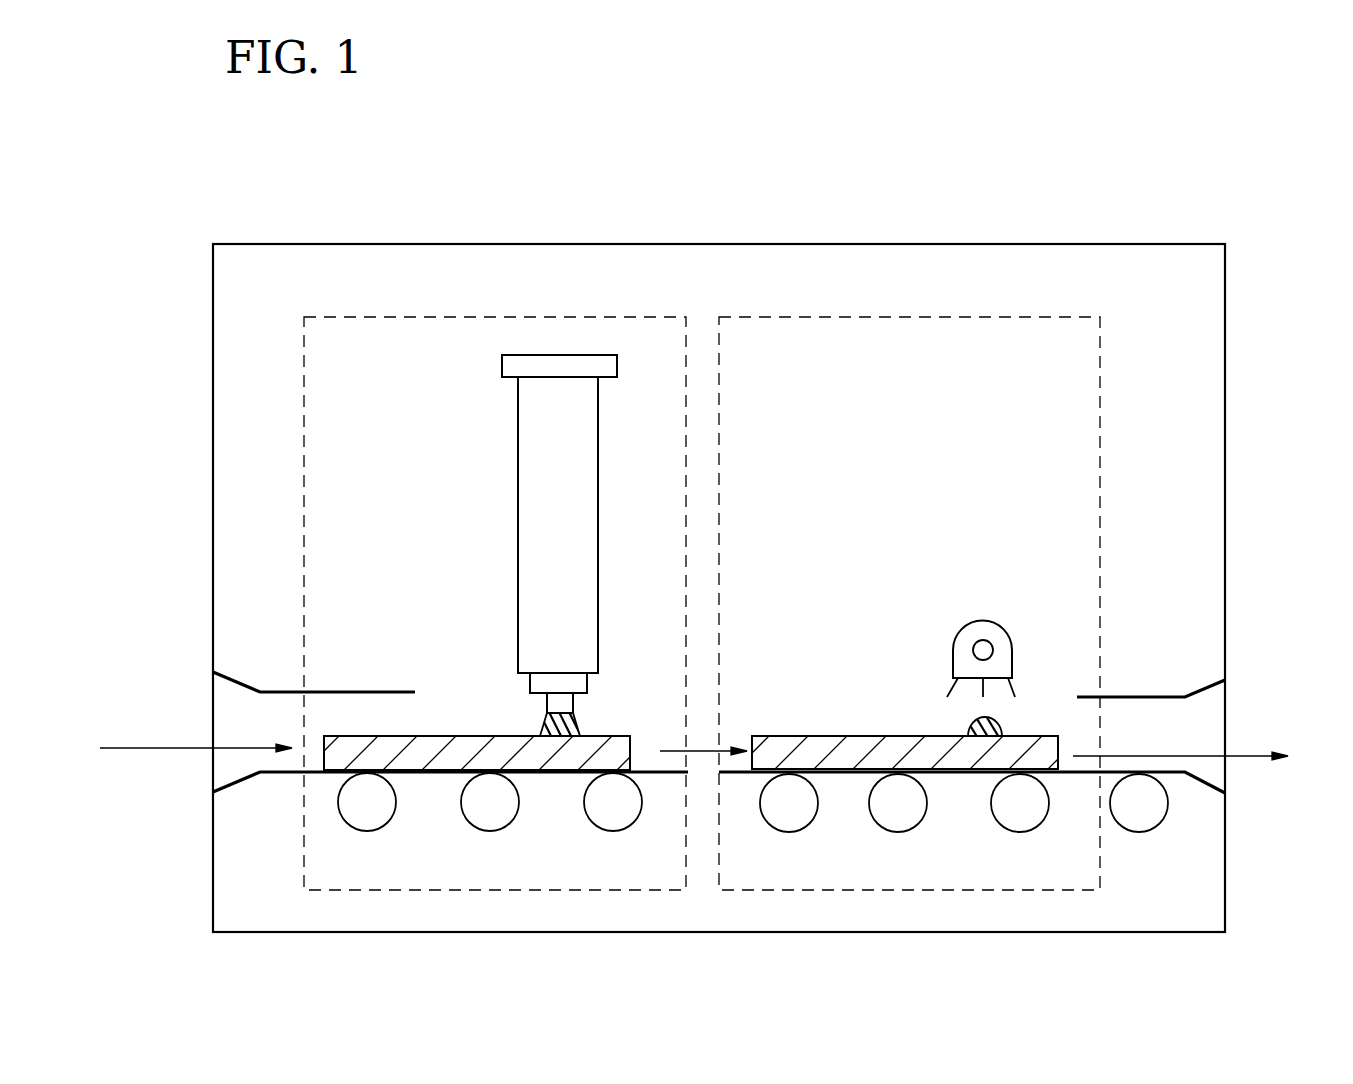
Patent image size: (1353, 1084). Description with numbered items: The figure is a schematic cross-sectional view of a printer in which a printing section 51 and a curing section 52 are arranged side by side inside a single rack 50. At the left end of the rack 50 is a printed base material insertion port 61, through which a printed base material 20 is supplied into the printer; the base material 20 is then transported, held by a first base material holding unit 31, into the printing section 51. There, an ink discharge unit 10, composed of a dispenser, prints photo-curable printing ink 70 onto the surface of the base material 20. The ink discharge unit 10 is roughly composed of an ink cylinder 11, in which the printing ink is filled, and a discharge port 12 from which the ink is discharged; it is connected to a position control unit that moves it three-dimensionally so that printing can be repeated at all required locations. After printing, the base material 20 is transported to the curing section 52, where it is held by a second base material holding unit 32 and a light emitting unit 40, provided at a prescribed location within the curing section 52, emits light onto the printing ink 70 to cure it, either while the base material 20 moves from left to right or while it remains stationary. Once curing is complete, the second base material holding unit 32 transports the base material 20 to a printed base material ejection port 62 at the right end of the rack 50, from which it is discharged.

The ink discharge unit 10 is at (530, 538).
The ink cylinder 11 is at (587, 532).
The discharge port 12 is at (577, 721).
The printed base material 20 is at (455, 735).
The first base material holding unit 31 is at (556, 775).
The second base material holding unit 32 is at (966, 771).
The light emitting unit 40 is at (987, 627).
The rack 50 is at (1118, 244).
The printing section 51 is at (396, 308).
The curing section 52 is at (893, 310).
The printed base material insertion port 61 is at (213, 697).
The printed base material ejection port 62 is at (1225, 716).
The printing ink 70 is at (545, 725).